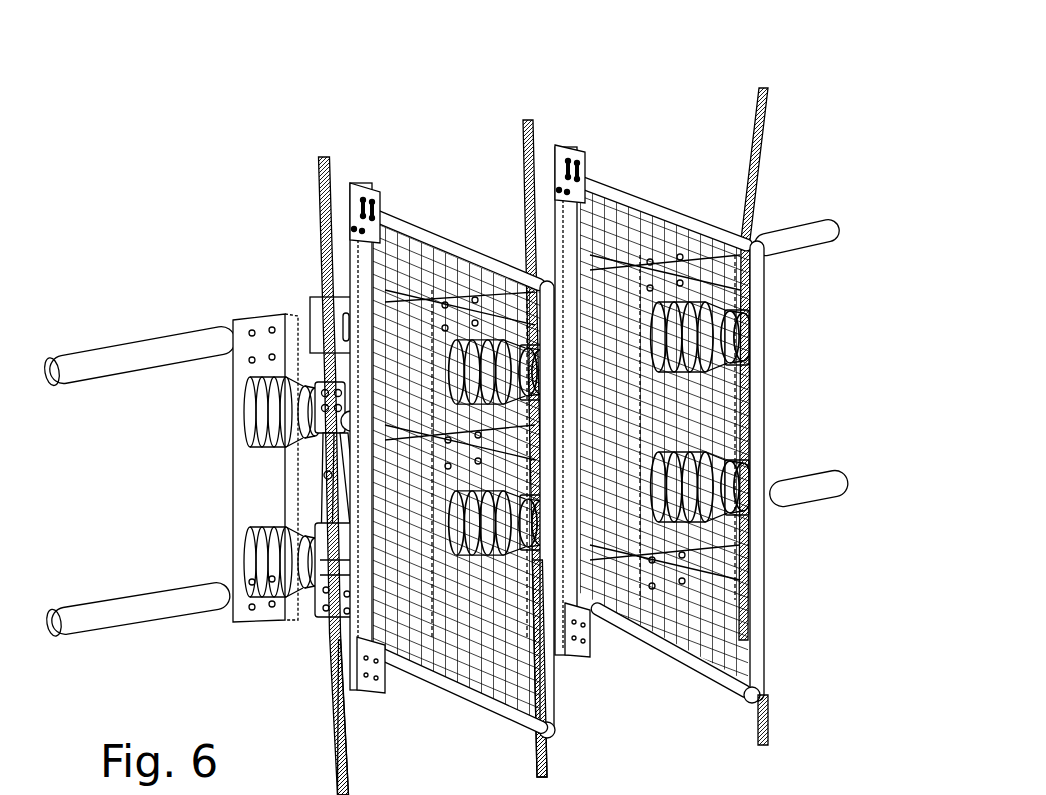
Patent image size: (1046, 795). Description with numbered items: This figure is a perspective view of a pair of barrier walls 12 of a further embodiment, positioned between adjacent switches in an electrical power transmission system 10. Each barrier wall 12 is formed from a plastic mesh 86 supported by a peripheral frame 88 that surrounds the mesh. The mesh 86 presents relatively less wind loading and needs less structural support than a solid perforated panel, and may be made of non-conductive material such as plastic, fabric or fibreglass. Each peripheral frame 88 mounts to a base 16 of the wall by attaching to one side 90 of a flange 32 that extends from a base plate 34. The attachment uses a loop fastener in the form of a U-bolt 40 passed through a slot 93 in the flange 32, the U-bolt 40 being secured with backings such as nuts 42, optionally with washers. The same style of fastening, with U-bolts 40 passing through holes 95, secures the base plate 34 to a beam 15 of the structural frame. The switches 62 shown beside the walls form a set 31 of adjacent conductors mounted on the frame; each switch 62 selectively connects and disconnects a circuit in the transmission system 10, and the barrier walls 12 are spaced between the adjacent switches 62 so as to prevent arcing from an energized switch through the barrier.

The electrical power transmission system 10 is at (705, 83).
The barrier wall 12 is at (408, 222).
The beam 15 is at (137, 348).
The base 16 is at (345, 250).
The set of adjacent conductors 31 is at (803, 88).
The flange 32 is at (353, 660).
The base plate 34 is at (317, 303).
The U-bolt 40 is at (388, 208).
The nut 42 is at (350, 245).
The switch 62 is at (303, 486).
The plastic mesh 86 is at (455, 675).
The peripheral frame 88 is at (558, 708).
The side of flange 90 is at (392, 188).
The slot 93 is at (375, 195).
The holes 95 is at (670, 441).